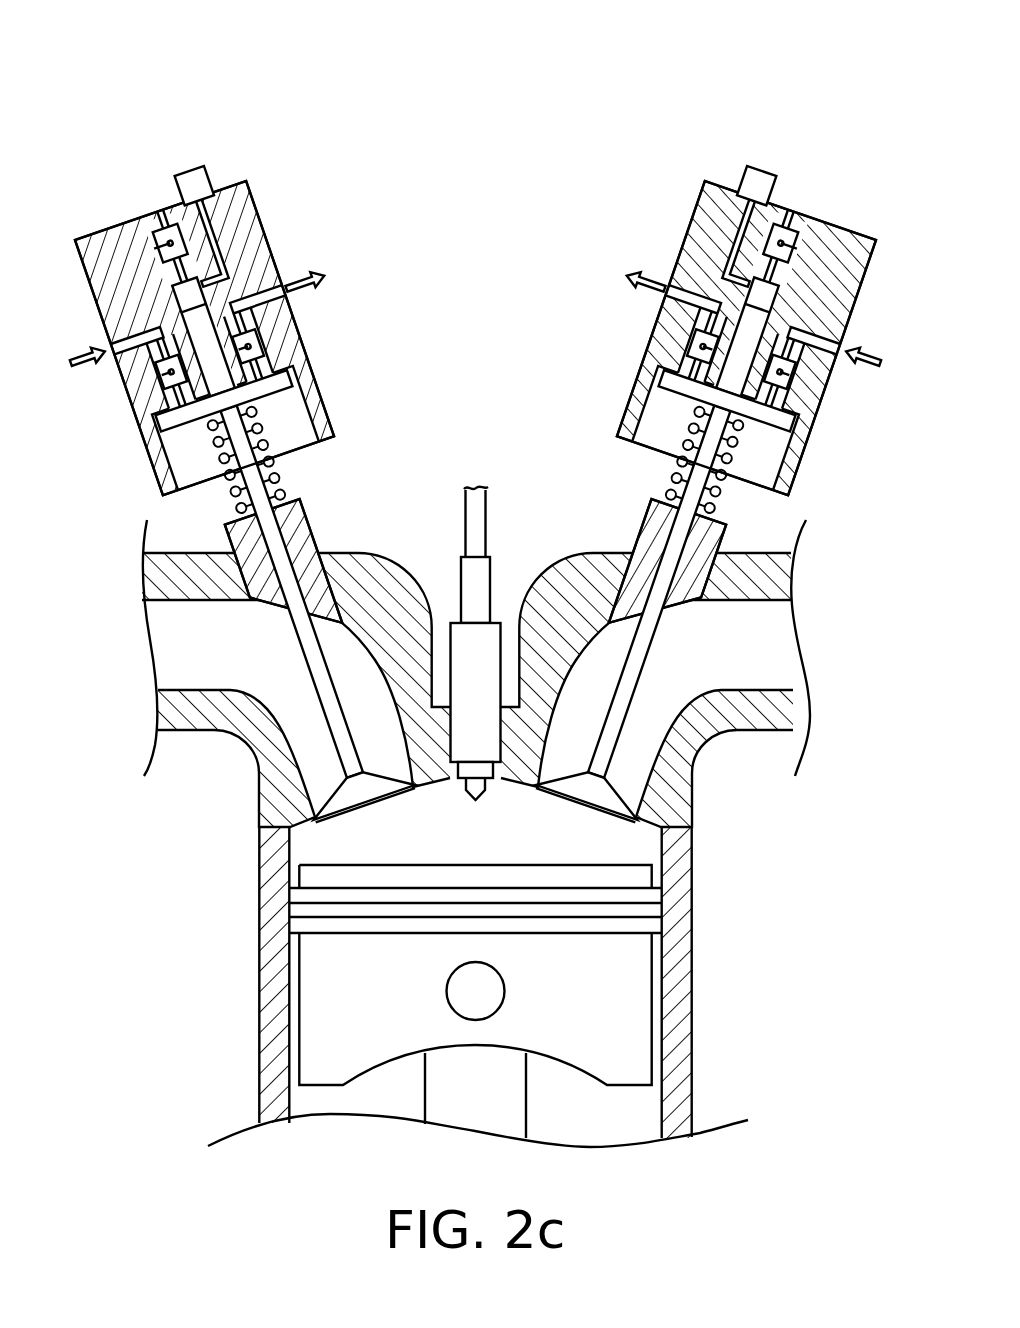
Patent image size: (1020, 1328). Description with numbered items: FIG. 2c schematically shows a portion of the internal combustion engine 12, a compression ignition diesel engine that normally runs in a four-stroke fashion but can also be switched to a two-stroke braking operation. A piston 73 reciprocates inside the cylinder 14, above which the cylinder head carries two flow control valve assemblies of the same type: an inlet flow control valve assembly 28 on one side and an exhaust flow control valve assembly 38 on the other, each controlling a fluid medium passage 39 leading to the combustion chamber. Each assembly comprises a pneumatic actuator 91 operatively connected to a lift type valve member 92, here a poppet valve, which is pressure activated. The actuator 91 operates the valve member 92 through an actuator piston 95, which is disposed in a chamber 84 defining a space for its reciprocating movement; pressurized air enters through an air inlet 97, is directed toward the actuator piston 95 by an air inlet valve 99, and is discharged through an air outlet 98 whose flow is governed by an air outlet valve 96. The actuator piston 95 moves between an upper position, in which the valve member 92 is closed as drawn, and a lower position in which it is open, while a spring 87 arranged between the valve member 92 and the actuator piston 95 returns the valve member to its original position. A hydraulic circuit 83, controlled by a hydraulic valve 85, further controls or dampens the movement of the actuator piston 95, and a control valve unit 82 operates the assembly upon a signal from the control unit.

The internal combustion engine 12 is at (545, 82).
The cylinder 14 is at (225, 910).
The inlet flow control valve assembly 28 is at (853, 215).
The exhaust flow control valve assembly 38 is at (98, 215).
The fluid medium passage 39 is at (193, 653).
The piston 73 is at (348, 1013).
The control valve unit 82 is at (186, 168).
The hydraulic circuit 83 is at (170, 245).
The chamber 84 is at (193, 453).
The hydraulic valve 85 is at (160, 258).
The spring 87 is at (283, 487).
The actuator 91 is at (262, 187).
The valve member 92 is at (268, 535).
The actuator piston 95 is at (283, 390).
The air outlet valve 96 is at (256, 347).
The air inlet 97 is at (138, 370).
The air outlet 98 is at (257, 302).
The air inlet valve 99 is at (150, 400).